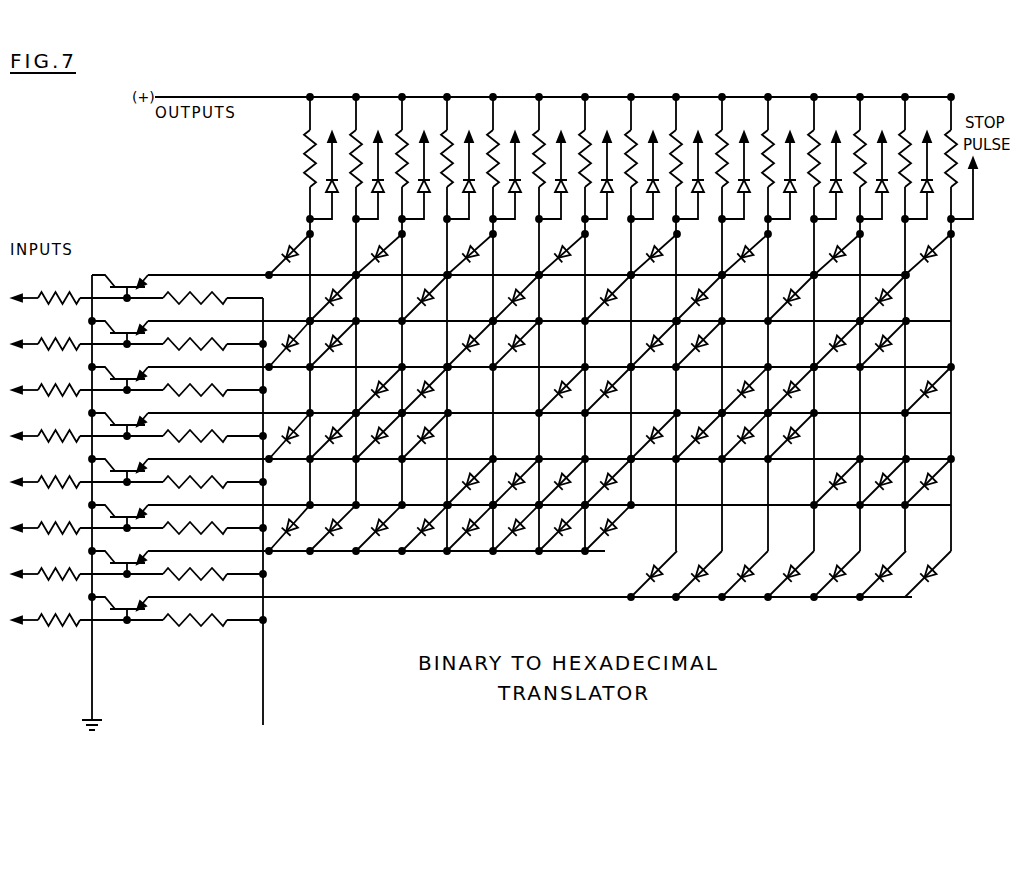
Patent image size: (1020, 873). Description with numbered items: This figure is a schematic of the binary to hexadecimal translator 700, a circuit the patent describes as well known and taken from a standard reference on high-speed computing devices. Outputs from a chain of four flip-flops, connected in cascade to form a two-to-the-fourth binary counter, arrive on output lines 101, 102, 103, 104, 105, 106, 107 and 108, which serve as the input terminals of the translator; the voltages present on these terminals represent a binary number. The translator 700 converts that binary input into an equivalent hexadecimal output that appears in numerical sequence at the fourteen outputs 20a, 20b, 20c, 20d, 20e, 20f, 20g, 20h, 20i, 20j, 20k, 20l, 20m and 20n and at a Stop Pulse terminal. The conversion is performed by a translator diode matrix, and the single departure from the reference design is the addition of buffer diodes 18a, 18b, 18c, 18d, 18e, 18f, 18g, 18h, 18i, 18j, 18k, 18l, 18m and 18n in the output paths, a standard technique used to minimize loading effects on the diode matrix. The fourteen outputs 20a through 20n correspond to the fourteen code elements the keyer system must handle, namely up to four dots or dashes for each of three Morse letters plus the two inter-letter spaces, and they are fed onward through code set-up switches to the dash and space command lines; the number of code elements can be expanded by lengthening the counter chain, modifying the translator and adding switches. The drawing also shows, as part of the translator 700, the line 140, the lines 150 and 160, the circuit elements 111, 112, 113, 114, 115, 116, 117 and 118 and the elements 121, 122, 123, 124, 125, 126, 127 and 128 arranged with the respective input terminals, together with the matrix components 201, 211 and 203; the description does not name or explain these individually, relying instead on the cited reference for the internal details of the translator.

The positive supply output line 140 is at (184, 98).
The output 20a is at (325, 142).
The output 20b is at (371, 142).
The output 20c is at (416, 142).
The output 20d is at (462, 142).
The output 20e is at (508, 142).
The output 20f is at (552, 142).
The output 20g is at (600, 142).
The output 20h is at (646, 142).
The output 20i is at (688, 142).
The output 20j is at (734, 142).
The output 20k is at (783, 142).
The output 20l is at (826, 142).
The output 20m is at (877, 142).
The output 20n is at (920, 142).
The buffer diode 18a is at (336, 196).
The buffer diode 18b is at (382, 196).
The buffer diode 18c is at (428, 196).
The buffer diode 18d is at (473, 196).
The buffer diode 18e is at (519, 196).
The buffer diode 18f is at (565, 196).
The buffer diode 18g is at (611, 196).
The buffer diode 18h is at (657, 196).
The buffer diode 18i is at (702, 196).
The buffer diode 18j is at (748, 196).
The buffer diode 18k is at (794, 196).
The buffer diode 18l is at (840, 196).
The buffer diode 18m is at (886, 196).
The buffer diode 18n is at (931, 196).
The matrix diode 201 is at (289, 249).
The matrix diode 211 is at (326, 301).
The matrix diode 203 is at (297, 343).
The input terminal 101 is at (24, 289).
The input terminal 102 is at (24, 335).
The input terminal 103 is at (24, 381).
The input terminal 104 is at (24, 427).
The input terminal 105 is at (24, 473).
The input terminal 106 is at (24, 519).
The input terminal 107 is at (24, 565).
The input terminal 108 is at (24, 611).
The input resistor 121 is at (42, 299).
The input resistor 122 is at (42, 345).
The input resistor 123 is at (42, 391).
The input resistor 124 is at (42, 437).
The input resistor 125 is at (42, 483).
The input resistor 126 is at (42, 529).
The input resistor 127 is at (42, 575).
The input resistor 128 is at (42, 621).
The transistor 111 is at (139, 272).
The transistor 112 is at (139, 318).
The transistor 113 is at (139, 364).
The transistor 114 is at (139, 410).
The transistor 115 is at (139, 456).
The transistor 116 is at (139, 502).
The transistor 117 is at (139, 548).
The transistor 118 is at (139, 594).
The ground line 160 is at (94, 698).
The negative supply line 150 is at (263, 698).
The binary-hexadecimal translator 700 is at (868, 604).